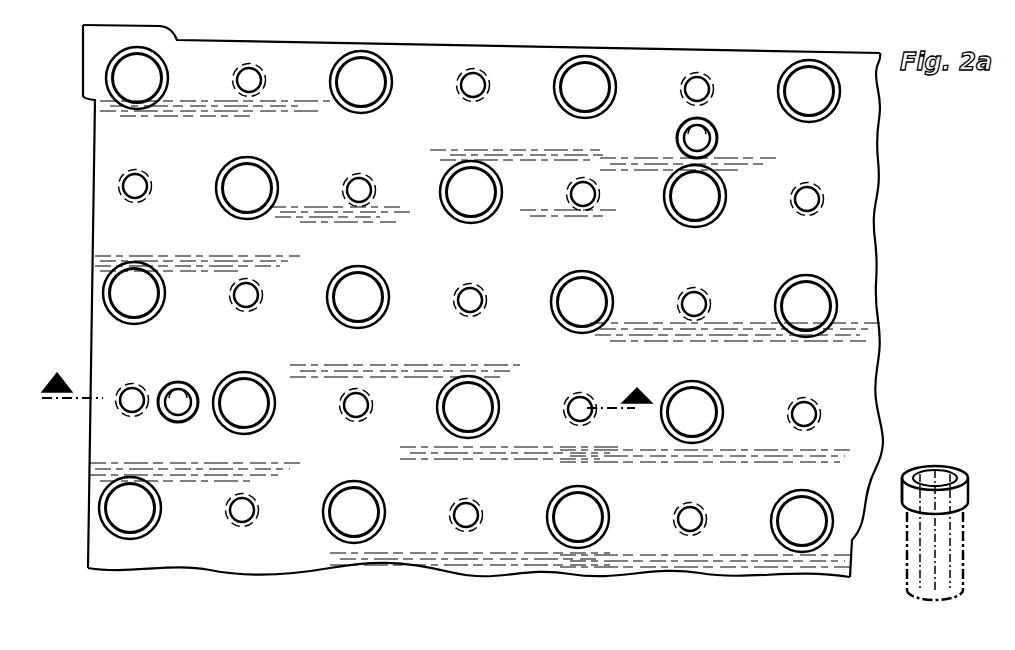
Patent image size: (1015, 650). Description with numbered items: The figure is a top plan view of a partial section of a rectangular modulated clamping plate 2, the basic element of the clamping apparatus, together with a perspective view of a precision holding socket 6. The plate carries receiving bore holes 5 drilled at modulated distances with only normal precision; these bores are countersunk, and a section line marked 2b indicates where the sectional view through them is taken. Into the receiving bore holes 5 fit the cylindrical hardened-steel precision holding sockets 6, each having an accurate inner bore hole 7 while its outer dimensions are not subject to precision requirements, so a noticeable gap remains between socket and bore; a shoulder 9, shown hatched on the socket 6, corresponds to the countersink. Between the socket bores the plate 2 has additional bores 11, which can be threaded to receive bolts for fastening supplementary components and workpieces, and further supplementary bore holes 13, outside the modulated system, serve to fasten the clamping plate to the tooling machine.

The modulated clamping plate 2 is at (86, 214).
The receiving bore holes 5 is at (486, 414).
The additional bores 11 is at (478, 78).
The supplementary bore holes 13 is at (695, 125).
The precision holding socket 6 is at (934, 501).
The inner bore hole 7 is at (955, 468).
The shoulder 9 is at (896, 478).
The section line 2b is at (345, 405).